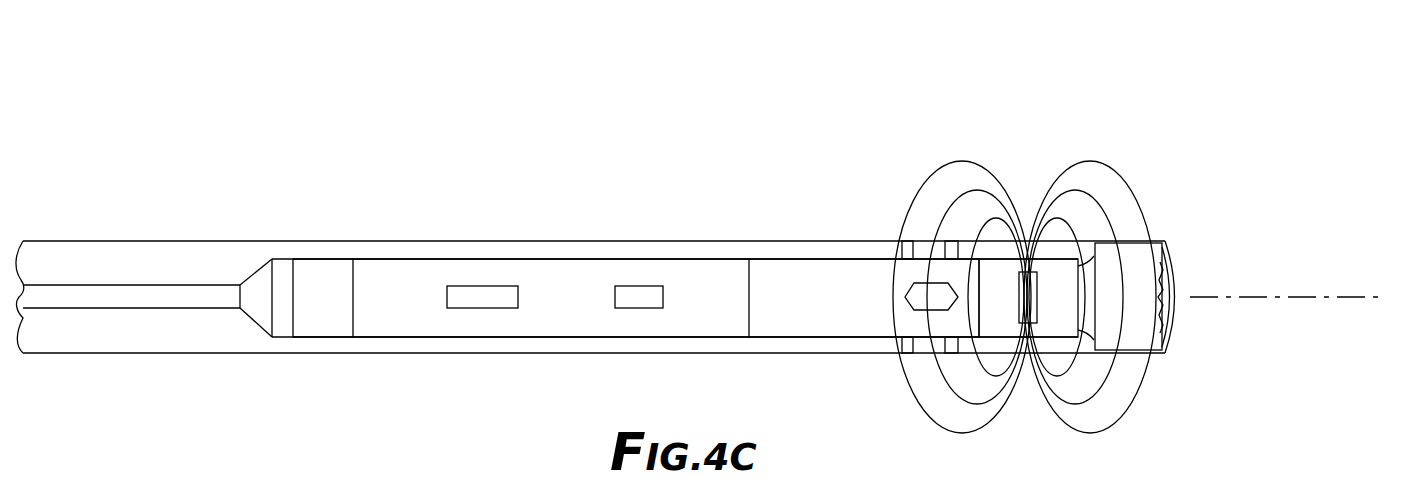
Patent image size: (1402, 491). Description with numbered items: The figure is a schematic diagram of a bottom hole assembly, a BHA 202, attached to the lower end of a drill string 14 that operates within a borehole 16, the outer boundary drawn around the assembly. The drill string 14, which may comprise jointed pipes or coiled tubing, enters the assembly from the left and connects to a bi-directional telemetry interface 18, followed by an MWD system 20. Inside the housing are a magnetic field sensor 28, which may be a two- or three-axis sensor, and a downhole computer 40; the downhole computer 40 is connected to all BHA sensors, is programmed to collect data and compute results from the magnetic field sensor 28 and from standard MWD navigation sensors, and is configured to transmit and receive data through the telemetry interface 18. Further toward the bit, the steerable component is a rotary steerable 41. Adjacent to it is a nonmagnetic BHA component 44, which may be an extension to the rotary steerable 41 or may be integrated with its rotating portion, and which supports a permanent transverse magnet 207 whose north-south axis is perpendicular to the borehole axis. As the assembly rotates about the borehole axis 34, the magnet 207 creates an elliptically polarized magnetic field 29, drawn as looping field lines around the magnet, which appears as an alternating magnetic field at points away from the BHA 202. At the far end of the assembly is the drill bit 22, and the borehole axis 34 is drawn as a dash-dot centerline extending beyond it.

The second drill string 14 is at (224, 292).
The second borehole 16 is at (282, 241).
The second bi-directional telemetry interface 18 is at (330, 280).
The second MWD system 20 is at (415, 277).
The magnetic field sensor 28 is at (492, 286).
The downhole computer 40 is at (640, 286).
The rotary steerable 41 is at (840, 287).
The nonmagnetic BHA component 44 is at (997, 268).
The magnetic field 29 is at (1000, 187).
The permanent transverse magnet 207 is at (1037, 287).
The second drill bit 22 is at (1162, 268).
The second borehole axis 34 is at (1315, 297).
The second BHA 202 is at (551, 183).